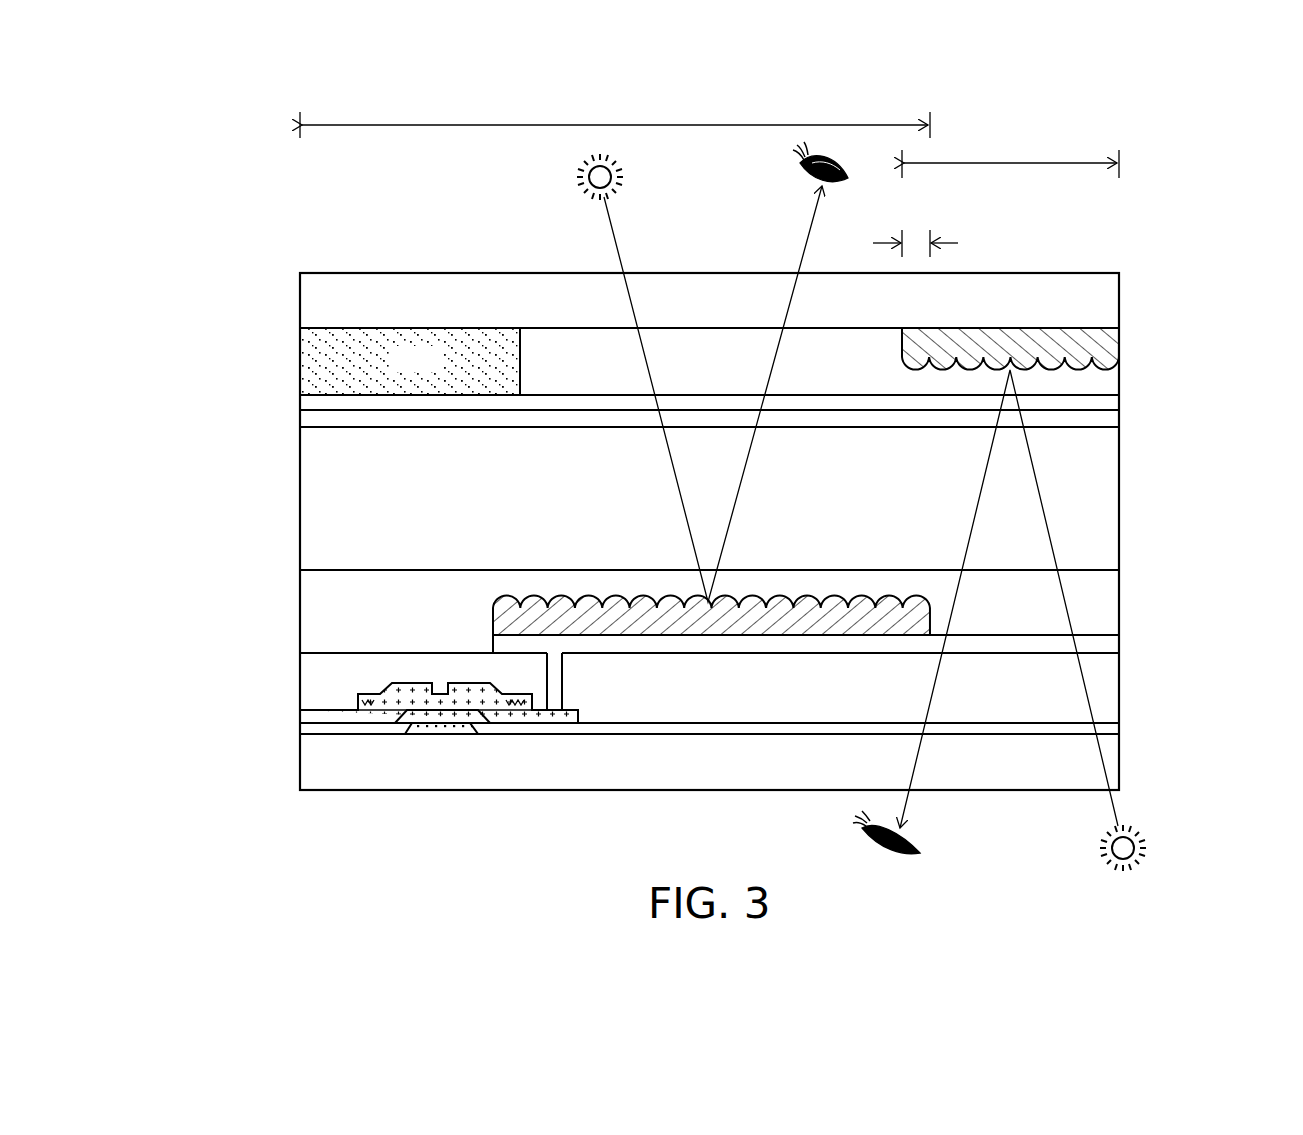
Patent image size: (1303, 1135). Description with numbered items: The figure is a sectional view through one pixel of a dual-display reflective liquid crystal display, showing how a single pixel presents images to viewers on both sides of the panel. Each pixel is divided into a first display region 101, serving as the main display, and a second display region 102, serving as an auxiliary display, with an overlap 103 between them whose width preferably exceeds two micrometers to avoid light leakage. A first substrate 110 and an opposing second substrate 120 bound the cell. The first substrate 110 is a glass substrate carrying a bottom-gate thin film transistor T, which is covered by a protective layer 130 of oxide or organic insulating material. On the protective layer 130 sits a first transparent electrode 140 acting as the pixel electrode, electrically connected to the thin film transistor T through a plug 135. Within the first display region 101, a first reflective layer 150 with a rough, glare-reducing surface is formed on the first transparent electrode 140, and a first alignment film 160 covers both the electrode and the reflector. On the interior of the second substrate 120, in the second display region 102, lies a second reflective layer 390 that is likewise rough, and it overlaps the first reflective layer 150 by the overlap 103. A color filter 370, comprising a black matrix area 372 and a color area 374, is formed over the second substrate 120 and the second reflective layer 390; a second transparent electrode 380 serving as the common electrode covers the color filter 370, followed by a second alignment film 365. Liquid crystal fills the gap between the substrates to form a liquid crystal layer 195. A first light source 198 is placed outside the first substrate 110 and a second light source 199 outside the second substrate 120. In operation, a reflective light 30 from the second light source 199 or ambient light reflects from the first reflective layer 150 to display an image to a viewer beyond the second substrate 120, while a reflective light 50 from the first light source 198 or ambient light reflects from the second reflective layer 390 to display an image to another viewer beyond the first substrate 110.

The reflective light 30 is at (611, 240).
The reflective light 50 is at (1116, 808).
The first display region 101 is at (615, 114).
The second display region 102 is at (1010, 152).
The overlap 103 is at (915, 227).
The first substrate 110 is at (315, 769).
The second substrate 120 is at (315, 302).
The protective layer 130 is at (315, 677).
The plug 135 is at (566, 676).
The first transparent electrode 140 is at (1108, 649).
The first reflective layer 150 is at (503, 615).
The first alignment film 160 is at (1108, 609).
The liquid crystal layer 195 is at (315, 506).
The first light source 198 is at (1140, 846).
The second light source 199 is at (595, 173).
The second alignment film 365 is at (1078, 420).
The color filter 370 is at (190, 345).
The black matrix area 372 is at (302, 363).
The color area 374 is at (594, 358).
The second transparent electrode 380 is at (1108, 405).
The second reflective layer 390 is at (1108, 352).
The thin film transistor T is at (442, 752).